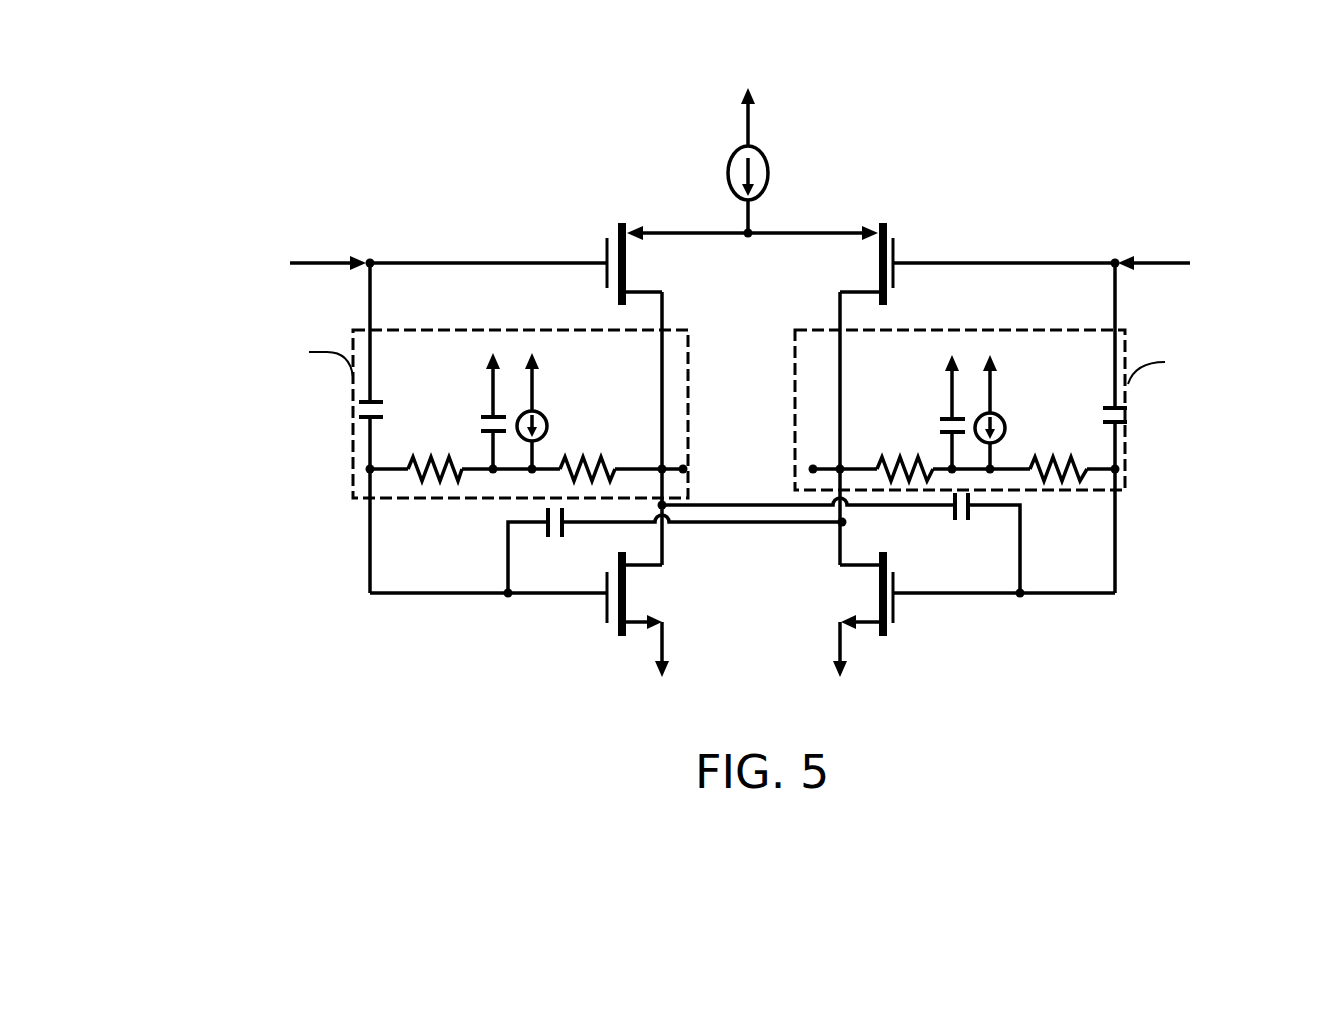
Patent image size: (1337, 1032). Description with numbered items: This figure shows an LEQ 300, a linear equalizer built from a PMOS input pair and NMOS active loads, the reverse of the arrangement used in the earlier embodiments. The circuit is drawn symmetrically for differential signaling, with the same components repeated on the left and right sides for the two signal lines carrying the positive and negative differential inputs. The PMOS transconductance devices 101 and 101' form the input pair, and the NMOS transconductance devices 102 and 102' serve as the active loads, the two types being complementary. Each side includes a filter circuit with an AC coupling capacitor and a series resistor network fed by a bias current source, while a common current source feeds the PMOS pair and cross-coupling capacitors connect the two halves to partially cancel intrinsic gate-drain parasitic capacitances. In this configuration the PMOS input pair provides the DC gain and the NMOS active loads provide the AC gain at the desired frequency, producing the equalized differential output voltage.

The LEQ 300 is at (766, 61).
The transconductance device 101 is at (668, 394).
The transconductance device 101' is at (820, 394).
The transconductance device 102 is at (667, 611).
The transconductance device 102' is at (823, 611).